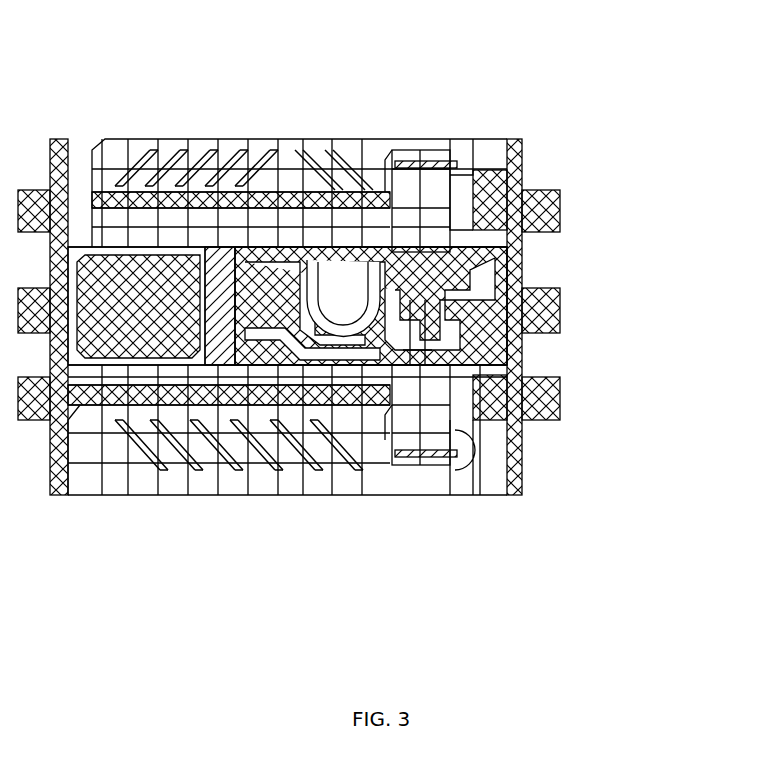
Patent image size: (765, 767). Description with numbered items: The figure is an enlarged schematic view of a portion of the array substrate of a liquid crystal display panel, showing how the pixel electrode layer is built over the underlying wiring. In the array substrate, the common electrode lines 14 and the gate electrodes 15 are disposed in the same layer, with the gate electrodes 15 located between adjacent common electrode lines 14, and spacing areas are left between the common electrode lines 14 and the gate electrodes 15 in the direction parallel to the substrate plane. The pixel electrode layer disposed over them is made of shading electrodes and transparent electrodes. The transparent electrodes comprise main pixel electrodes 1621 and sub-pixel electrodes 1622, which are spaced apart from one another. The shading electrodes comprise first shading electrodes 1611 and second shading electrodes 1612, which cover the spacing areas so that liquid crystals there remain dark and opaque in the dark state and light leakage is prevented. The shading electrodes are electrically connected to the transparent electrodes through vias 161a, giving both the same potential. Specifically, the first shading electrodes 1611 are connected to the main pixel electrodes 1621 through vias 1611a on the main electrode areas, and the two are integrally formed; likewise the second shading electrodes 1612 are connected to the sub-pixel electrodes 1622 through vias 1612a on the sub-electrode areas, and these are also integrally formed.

The common electrode lines 14 is at (560, 195).
The gate electrodes 15 is at (560, 304).
The vias 161a is at (225, 540).
The first shading electrodes 1611 is at (477, 285).
The vias on the main electrode areas 1611a is at (421, 138).
The second shading electrodes 1612 is at (520, 368).
The vias on the sub-electrode areas 1612a is at (427, 470).
The main pixel electrodes 1621 is at (455, 152).
The sub-pixel electrodes 1622 is at (520, 457).